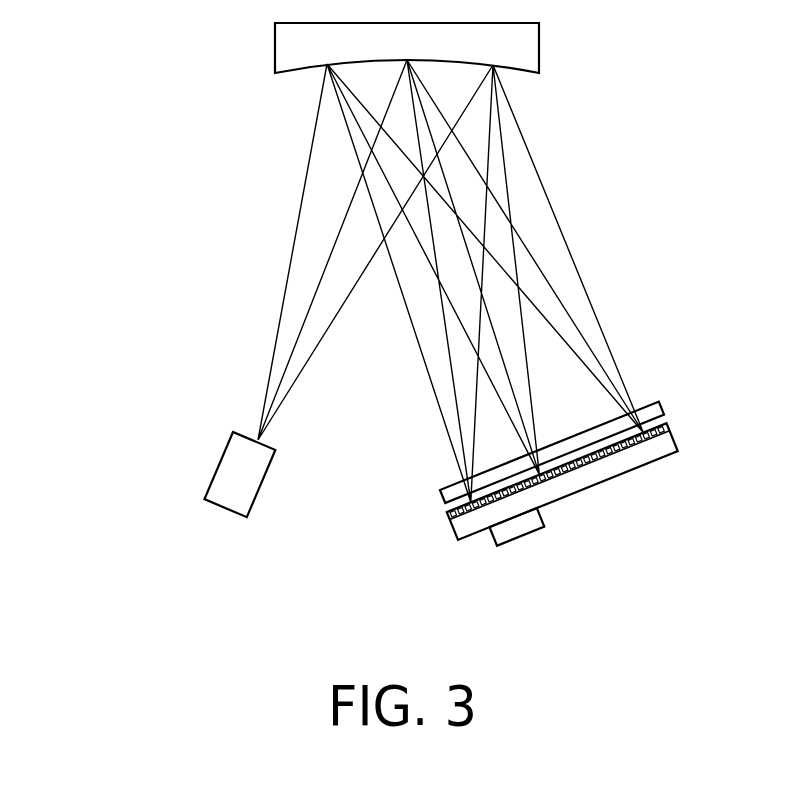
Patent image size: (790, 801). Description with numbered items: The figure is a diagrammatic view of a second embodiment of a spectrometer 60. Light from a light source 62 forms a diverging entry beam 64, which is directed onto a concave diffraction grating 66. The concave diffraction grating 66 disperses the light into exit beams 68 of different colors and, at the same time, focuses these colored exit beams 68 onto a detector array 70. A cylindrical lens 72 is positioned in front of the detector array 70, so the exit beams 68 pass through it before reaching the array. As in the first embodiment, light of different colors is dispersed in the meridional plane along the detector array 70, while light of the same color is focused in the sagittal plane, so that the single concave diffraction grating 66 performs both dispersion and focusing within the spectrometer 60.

The spectrometer 60 is at (142, 137).
The light source 62 is at (230, 474).
The diverging entry beam 64 is at (278, 314).
The concave diffraction grating 66 is at (520, 46).
The exit beams 68 is at (583, 284).
The detector array 70 is at (597, 460).
The cylindrical lens 72 is at (440, 497).